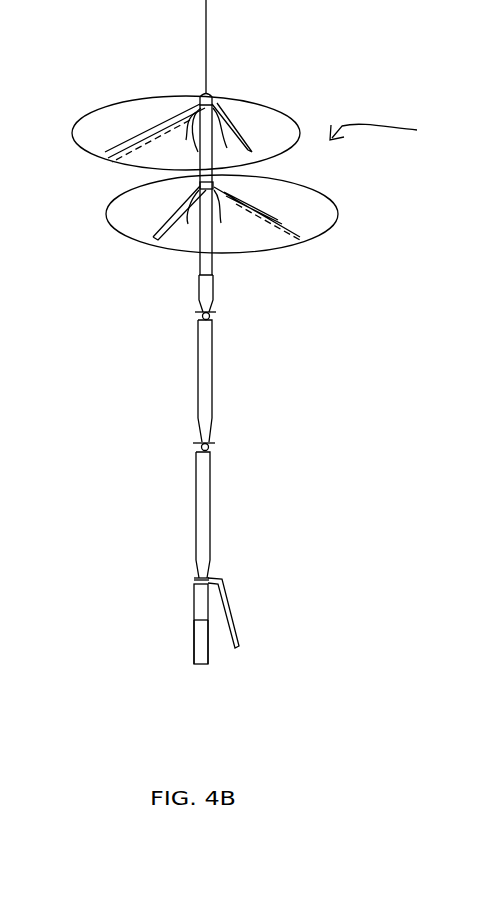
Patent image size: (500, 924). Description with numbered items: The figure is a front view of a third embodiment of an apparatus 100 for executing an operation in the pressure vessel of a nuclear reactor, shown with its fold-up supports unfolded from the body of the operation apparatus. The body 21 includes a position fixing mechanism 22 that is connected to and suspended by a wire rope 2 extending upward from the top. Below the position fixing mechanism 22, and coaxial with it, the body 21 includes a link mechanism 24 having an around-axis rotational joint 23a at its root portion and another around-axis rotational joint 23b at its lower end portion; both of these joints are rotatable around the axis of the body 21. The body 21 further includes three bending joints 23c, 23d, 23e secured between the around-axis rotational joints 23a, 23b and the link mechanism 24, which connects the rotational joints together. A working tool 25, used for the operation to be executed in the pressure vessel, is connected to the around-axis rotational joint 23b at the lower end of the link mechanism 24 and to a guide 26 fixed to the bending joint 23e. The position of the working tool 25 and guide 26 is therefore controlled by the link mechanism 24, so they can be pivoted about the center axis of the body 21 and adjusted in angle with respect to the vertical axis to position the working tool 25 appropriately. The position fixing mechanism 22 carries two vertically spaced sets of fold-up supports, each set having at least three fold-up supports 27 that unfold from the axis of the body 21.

The wind power generator 100 is at (396, 130).
The wire rope 2 is at (206, 58).
The body 21 is at (190, 406).
The position fixing mechanism 22 is at (142, 100).
The around-axis rotational joint 23a is at (196, 280).
The around-axis rotational joint 23b is at (188, 623).
The bending joint 23c is at (212, 312).
The bending joint 23d is at (210, 447).
The bending joint 23e is at (195, 578).
The link mechanism 24 is at (213, 355).
The working tool 25 is at (190, 655).
The guide 26 is at (229, 601).
The fold-up support 27 is at (237, 127).